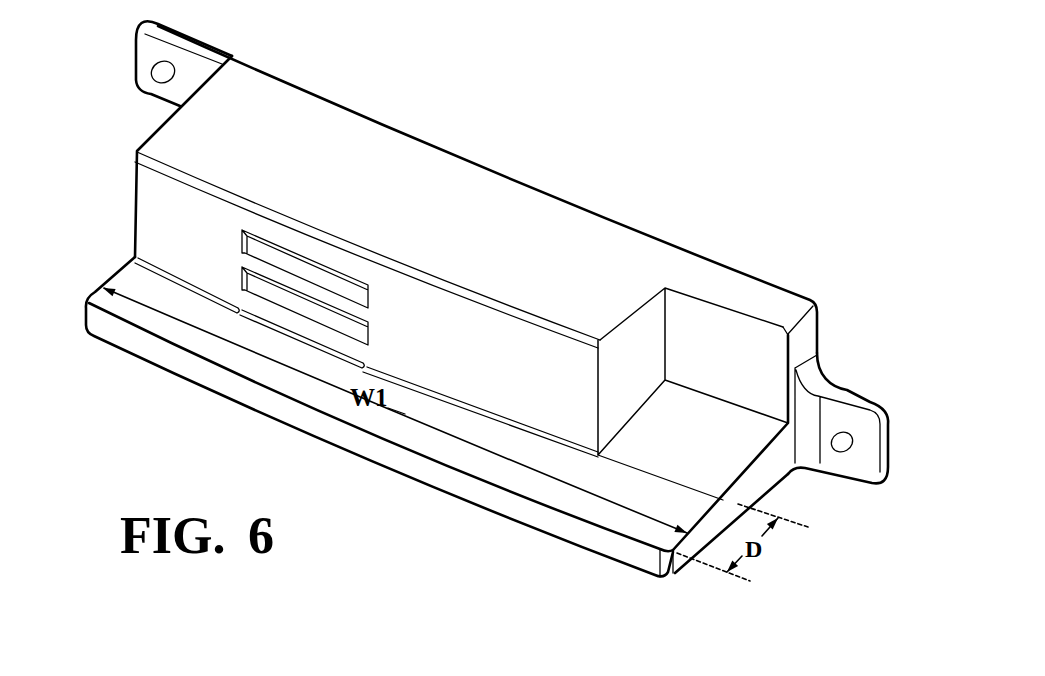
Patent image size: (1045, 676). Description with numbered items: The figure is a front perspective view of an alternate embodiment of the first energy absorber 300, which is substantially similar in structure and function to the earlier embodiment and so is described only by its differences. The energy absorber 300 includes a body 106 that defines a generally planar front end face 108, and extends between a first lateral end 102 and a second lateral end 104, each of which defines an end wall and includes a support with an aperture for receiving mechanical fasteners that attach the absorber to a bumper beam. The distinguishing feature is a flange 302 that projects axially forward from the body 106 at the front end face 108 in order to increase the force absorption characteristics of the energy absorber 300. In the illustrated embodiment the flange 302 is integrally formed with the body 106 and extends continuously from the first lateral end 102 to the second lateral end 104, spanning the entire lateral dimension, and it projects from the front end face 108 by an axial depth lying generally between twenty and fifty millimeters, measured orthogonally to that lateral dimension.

The first lateral end 102 is at (115, 120).
The second lateral end 104 is at (860, 353).
The body 106 is at (447, 188).
The front end face 108 is at (530, 373).
The first energy absorber 300 is at (596, 128).
The flange 302 is at (442, 509).